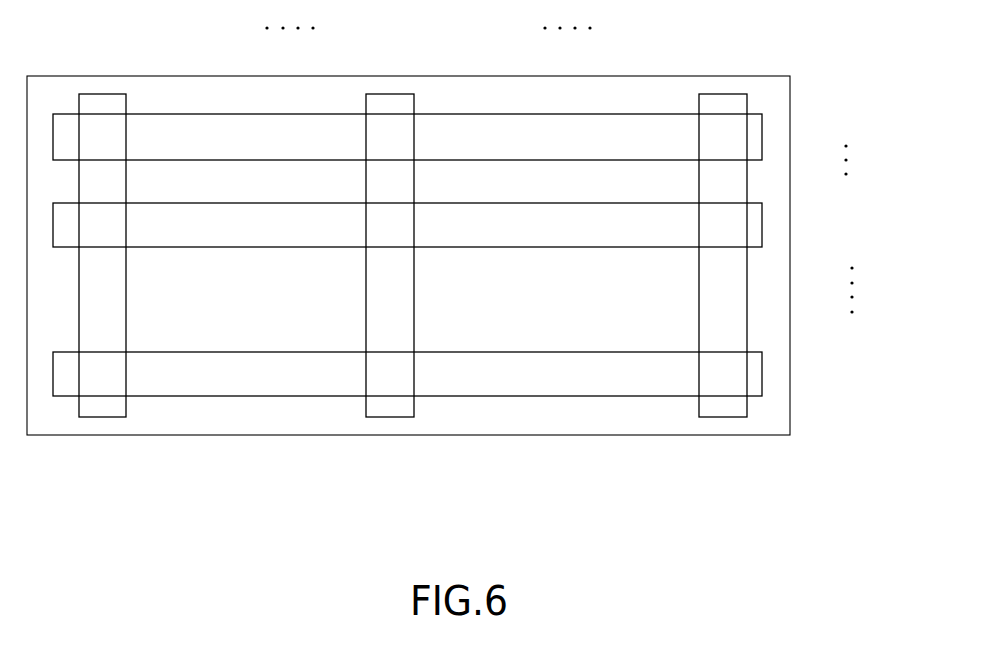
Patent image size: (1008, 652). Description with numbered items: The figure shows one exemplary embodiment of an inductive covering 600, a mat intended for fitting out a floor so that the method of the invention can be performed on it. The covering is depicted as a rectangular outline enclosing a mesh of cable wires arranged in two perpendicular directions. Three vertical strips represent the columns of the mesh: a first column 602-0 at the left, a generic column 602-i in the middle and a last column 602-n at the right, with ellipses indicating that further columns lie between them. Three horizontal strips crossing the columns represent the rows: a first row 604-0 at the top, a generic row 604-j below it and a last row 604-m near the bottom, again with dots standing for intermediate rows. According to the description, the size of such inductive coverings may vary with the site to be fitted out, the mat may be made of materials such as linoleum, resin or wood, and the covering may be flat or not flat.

The inductive covering 600 is at (690, 436).
The column 602-0 is at (107, 93).
The column 602-i is at (378, 94).
The column 602-n is at (732, 94).
The row 604-0 is at (762, 135).
The row 604-j is at (762, 235).
The row 604-m is at (762, 385).